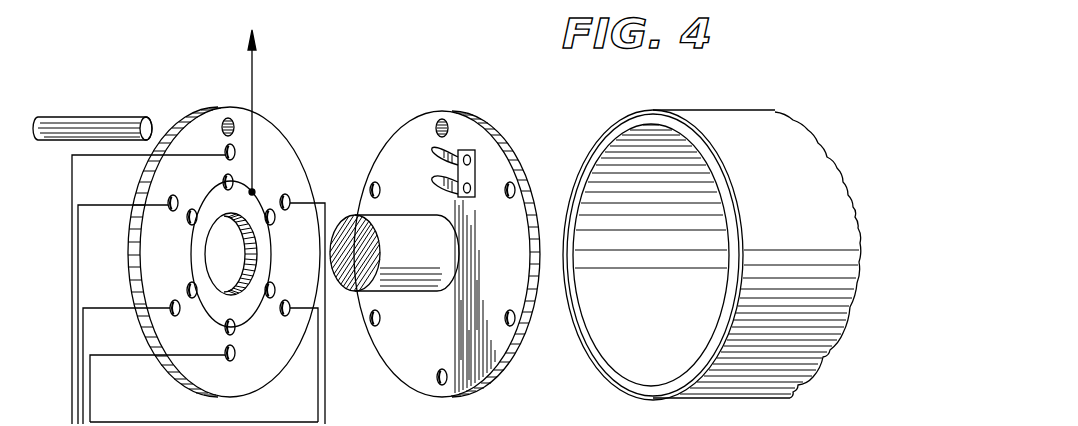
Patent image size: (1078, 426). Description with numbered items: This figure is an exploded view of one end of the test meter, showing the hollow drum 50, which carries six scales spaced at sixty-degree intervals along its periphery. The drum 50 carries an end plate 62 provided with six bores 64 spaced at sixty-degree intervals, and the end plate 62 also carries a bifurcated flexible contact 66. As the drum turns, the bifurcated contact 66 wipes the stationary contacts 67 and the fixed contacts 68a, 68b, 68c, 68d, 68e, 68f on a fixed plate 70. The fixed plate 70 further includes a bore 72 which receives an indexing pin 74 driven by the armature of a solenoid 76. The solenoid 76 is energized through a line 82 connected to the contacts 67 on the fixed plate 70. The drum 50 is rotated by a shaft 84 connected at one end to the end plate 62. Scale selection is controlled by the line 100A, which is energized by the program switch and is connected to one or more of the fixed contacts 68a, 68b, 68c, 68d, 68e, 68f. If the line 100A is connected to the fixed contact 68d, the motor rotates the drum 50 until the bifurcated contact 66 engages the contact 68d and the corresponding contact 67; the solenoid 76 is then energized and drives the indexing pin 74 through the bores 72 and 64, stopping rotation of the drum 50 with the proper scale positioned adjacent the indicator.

The drum 50 is at (768, 120).
The end plate 62 is at (462, 112).
The bores 64 is at (440, 122).
The bifurcated flexible contact 66 is at (477, 160).
The stationary contacts 67 is at (222, 180).
The fixed contact 68a is at (236, 150).
The fixed contact 68b is at (170, 200).
The fixed contact 68c is at (172, 316).
The fixed contact 68d is at (226, 360).
The fixed contact 68e is at (284, 318).
The fixed contact 68f is at (292, 198).
The fixed plate 70 is at (193, 118).
The bore 72 is at (228, 117).
The indexing pin 74 is at (73, 116).
The solenoid 76 is at (241, 11).
The line 82 is at (255, 65).
The shaft 84 is at (424, 290).
The line 100A is at (112, 355).